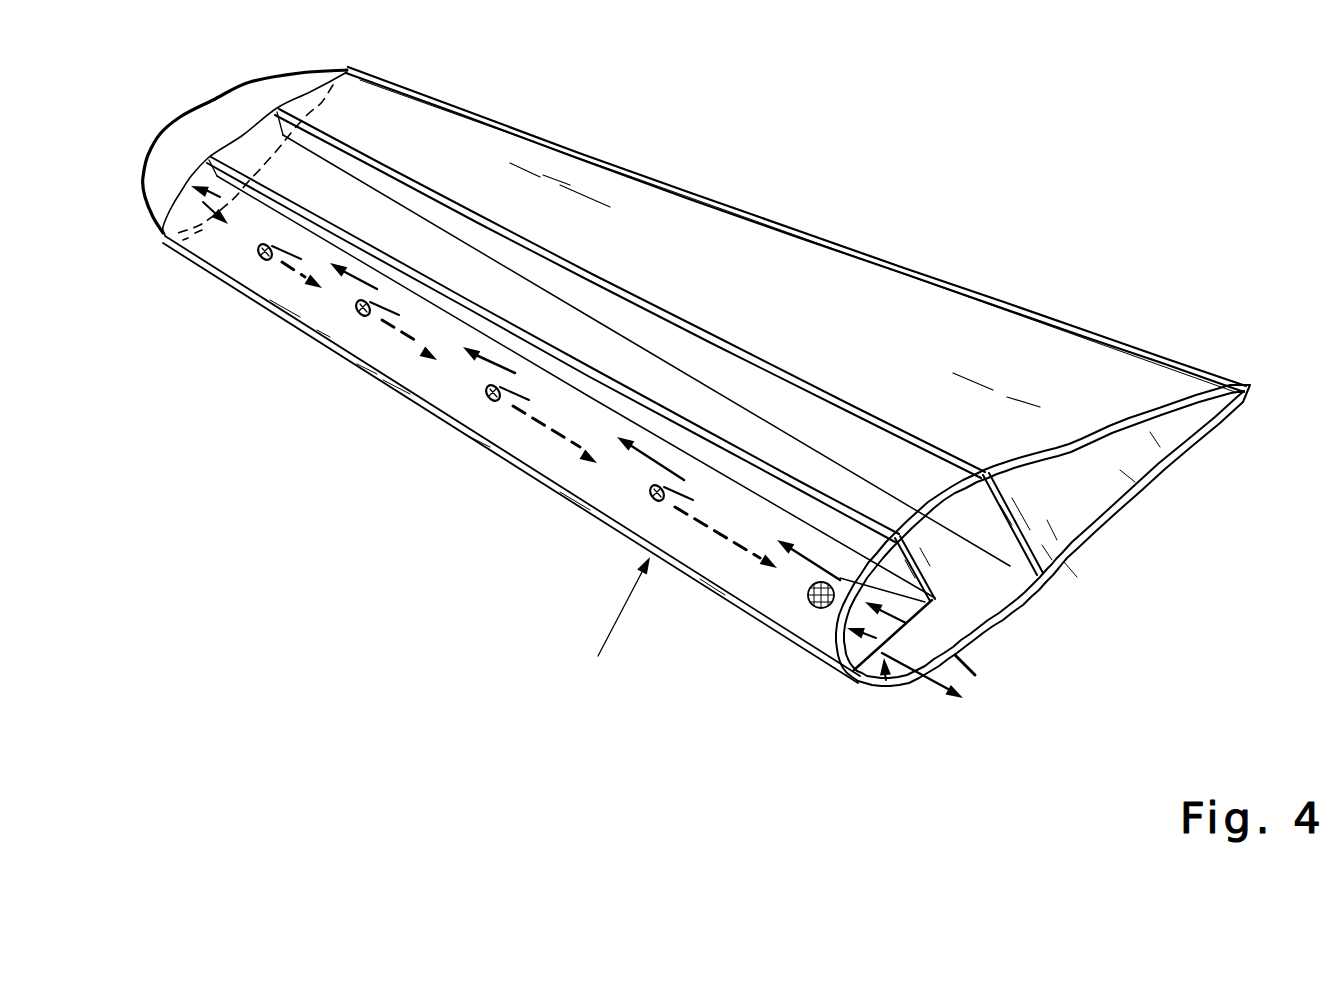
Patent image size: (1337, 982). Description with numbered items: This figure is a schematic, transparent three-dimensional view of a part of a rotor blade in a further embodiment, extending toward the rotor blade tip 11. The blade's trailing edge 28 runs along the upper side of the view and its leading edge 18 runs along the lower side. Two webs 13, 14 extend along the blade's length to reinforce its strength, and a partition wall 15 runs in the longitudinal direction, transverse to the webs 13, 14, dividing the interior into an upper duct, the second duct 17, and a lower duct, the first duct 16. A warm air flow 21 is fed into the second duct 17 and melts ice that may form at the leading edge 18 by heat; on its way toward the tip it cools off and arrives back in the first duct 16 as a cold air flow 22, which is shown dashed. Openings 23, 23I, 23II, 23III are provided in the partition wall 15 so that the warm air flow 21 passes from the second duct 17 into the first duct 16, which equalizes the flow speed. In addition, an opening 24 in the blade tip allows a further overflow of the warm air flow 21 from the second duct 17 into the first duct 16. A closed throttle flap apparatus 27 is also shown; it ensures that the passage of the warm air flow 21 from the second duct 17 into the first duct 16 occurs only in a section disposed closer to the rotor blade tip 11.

The rotor blade tip 11 is at (215, 128).
The opening 24 is at (202, 173).
The trailing edge 28 is at (766, 217).
The web 13 is at (731, 370).
The web 14 is at (740, 477).
The partition wall 15 is at (765, 612).
The leading edge of the rotor blade 18 is at (613, 628).
The opening 23 is at (645, 500).
The opening 23I is at (485, 405).
The opening 23II is at (352, 317).
The opening 23III is at (258, 256).
The throttle flap apparatus 27 is at (818, 610).
The warm air flow 21 is at (966, 657).
The second duct 17 is at (861, 686).
The first duct 16 is at (893, 688).
The cold air flow 22 is at (940, 705).